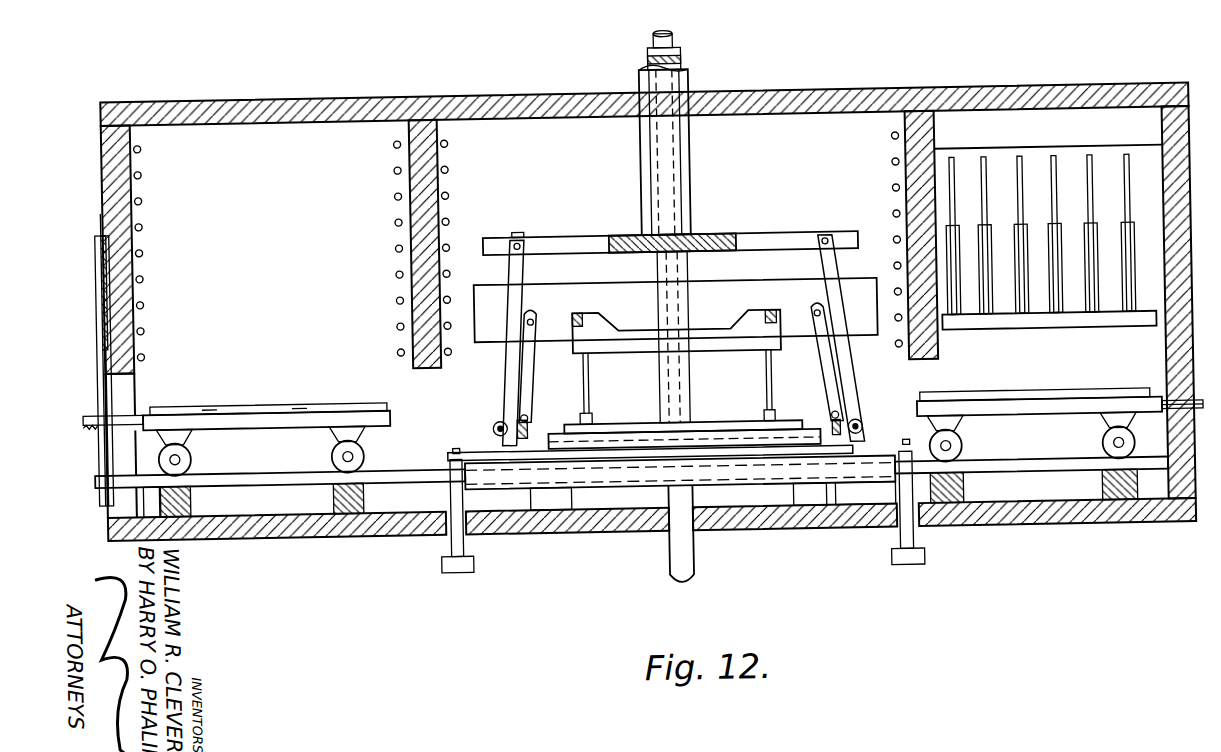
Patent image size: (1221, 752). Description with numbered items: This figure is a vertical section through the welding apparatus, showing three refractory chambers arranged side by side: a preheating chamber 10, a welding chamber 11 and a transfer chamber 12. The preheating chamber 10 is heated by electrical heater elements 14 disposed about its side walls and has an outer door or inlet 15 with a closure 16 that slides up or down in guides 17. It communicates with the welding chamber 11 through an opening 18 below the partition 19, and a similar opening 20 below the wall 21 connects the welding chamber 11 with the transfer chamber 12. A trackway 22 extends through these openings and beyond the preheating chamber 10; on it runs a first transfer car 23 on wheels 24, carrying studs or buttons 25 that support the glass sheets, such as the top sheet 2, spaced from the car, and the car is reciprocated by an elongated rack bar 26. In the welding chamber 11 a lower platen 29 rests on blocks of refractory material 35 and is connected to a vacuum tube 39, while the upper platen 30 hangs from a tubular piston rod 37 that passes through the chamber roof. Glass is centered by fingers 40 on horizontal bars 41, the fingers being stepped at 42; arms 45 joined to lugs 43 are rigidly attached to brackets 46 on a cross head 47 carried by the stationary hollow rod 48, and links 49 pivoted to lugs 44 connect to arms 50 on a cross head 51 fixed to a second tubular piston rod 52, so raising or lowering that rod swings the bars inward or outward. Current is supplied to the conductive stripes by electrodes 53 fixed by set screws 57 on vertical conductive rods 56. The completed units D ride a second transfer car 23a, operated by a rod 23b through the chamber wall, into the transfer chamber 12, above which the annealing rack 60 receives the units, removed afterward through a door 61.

The top sheet of glass 2 is at (268, 401).
The preheating chamber 10 is at (267, 127).
The welding chamber 11 is at (549, 124).
The transfer chamber 12 is at (1004, 127).
The electrical heater elements 14 is at (144, 244).
The outer door or inlet 15 is at (136, 370).
The closure 16 is at (97, 293).
The guides 17 is at (100, 241).
The door or opening 18 is at (429, 388).
The partition 19 is at (411, 254).
The opening 20 is at (921, 418).
The wall 21 is at (907, 209).
The trackway 22 is at (269, 477).
The first transfer car 23 is at (223, 410).
The second transfer car 23a is at (1003, 421).
The rod 23b is at (1178, 421).
The wheels 24 is at (189, 449).
The studs or buttons 25 is at (322, 412).
The rack bar 26 is at (86, 403).
The lower platen 29 is at (634, 465).
The upper platen 30 is at (645, 420).
The blocks of refractory material 35 is at (551, 497).
The piston rod 37 is at (684, 44).
The tube 39 is at (687, 553).
The fingers 40 is at (492, 430).
The horizontal bars 41 is at (526, 428).
The steps 42 is at (514, 446).
The lugs 43 is at (524, 411).
The lugs 44 is at (494, 420).
The arms 45 is at (533, 348).
The brackets 46 is at (544, 312).
The cross head 47 is at (628, 338).
The stationary hollow rod 48 is at (694, 65).
The links 49 is at (515, 274).
The arms 50 is at (541, 236).
The cross head 51 is at (723, 238).
The second tubular piston rod 52 is at (696, 181).
The electrodes 53 is at (472, 447).
The rods 56 is at (451, 537).
The set screws 57 is at (450, 447).
The annealing rack 60 is at (1130, 326).
The door 61 is at (1150, 168).
The units D is at (1058, 237).